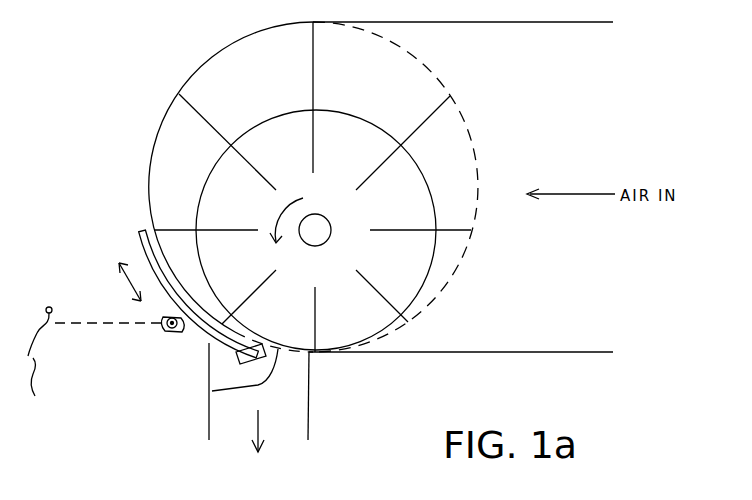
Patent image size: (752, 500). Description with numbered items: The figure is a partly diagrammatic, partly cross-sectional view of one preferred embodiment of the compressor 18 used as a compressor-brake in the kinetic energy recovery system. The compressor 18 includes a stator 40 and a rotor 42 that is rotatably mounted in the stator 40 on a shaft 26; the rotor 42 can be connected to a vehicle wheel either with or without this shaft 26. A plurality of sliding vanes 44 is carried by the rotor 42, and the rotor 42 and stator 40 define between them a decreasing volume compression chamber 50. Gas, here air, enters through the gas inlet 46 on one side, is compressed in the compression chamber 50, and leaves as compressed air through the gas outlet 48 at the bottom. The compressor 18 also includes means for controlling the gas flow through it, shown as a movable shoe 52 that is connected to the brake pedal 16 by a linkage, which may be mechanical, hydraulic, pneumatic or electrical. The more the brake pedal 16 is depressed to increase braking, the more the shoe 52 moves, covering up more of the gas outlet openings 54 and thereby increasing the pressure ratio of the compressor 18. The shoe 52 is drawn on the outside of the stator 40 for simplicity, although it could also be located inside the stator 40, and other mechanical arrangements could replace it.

The compressor 18 is at (182, 73).
The stator 40 is at (152, 143).
The gas inlet 46 is at (423, 23).
The rotor 42 is at (370, 121).
The shaft 26 is at (331, 231).
The sliding vanes 44 is at (312, 68).
The compression chamber 50 is at (186, 185).
The gas outlet openings 54 is at (232, 354).
The gas outlet 48 is at (209, 436).
The movable shoe 52 is at (119, 311).
The brake pedal 16 is at (45, 352).